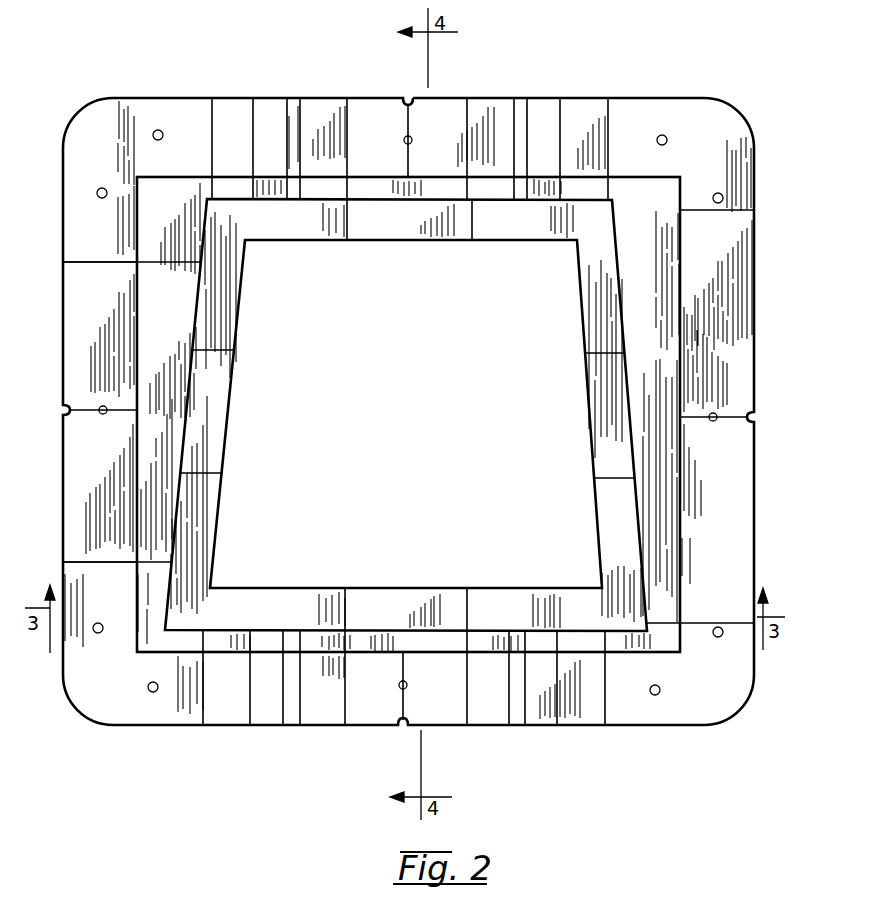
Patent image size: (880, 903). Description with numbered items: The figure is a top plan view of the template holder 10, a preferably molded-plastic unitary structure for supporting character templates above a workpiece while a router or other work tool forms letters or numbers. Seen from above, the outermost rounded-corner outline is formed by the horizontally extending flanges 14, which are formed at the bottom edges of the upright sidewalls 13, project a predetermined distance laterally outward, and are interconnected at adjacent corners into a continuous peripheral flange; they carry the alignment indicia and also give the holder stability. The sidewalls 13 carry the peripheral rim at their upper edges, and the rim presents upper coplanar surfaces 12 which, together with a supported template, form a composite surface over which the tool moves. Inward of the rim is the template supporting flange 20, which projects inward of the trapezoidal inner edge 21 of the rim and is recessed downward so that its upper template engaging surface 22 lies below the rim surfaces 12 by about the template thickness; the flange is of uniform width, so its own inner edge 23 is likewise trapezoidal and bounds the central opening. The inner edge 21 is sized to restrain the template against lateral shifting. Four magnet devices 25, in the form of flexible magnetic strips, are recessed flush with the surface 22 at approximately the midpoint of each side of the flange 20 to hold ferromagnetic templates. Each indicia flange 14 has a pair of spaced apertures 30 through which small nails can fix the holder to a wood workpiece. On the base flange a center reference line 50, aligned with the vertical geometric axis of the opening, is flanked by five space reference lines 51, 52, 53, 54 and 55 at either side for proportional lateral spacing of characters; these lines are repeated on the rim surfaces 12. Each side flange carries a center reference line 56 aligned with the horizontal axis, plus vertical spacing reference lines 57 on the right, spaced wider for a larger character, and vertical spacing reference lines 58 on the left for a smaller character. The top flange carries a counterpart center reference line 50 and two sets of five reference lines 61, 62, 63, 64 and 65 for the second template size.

The template holder 10 is at (712, 95).
The upper coplanar surfaces 12 is at (172, 309).
The upright sidewalls 13 is at (682, 524).
The horizontally extending flanges 14 is at (745, 178).
The template supporting flange 20 is at (581, 282).
The inner edge 21 is at (325, 200).
The upper template engaging surface 22 is at (275, 226).
The inner edge 23 is at (242, 282).
The magnet devices 25 is at (390, 240).
The apertures 30 is at (154, 139).
The center reference line 50 is at (408, 105).
The space reference line 51 is at (345, 718).
The space reference line 52 is at (300, 718).
The space reference line 53 is at (283, 718).
The space reference line 54 is at (250, 718).
The space reference line 55 is at (203, 718).
The center reference line 56 is at (95, 408).
The vertical spacing reference lines 57 is at (725, 212).
The vertical spacing reference lines 58 is at (95, 258).
The reference line 61 is at (347, 106).
The reference line 62 is at (300, 106).
The reference line 63 is at (287, 106).
The reference line 64 is at (253, 106).
The reference line 65 is at (212, 106).